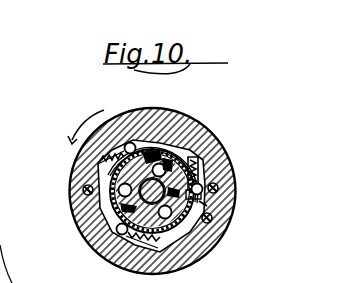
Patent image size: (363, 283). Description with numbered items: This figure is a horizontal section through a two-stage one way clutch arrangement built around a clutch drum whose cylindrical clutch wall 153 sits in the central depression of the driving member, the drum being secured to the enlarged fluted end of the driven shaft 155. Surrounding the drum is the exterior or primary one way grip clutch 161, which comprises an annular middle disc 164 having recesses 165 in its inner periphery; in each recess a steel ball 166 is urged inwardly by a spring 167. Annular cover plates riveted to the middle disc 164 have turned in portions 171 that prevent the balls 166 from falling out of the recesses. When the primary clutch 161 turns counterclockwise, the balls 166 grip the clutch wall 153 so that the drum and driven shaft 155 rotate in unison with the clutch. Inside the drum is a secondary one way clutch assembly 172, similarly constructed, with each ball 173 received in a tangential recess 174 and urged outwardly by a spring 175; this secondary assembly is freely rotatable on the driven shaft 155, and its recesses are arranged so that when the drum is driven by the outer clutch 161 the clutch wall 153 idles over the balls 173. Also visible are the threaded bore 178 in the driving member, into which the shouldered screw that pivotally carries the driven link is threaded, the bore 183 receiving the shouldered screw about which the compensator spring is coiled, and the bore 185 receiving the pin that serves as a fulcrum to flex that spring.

The cylindrical clutch wall 153 is at (188, 147).
The driven shaft 155 is at (110, 230).
The primary one way grip clutch 161 is at (70, 198).
The annular middle disc 164 is at (199, 233).
The recess 165 is at (218, 168).
The steel ball 166 is at (212, 198).
The spring 167 is at (214, 163).
The turned in portion 171 is at (203, 140).
The secondary one way clutch assembly 172 is at (113, 183).
The ball 173 is at (182, 153).
The tangential recess 174 is at (163, 150).
The spring 175 is at (147, 152).
The threaded bore 178 is at (110, 198).
The bore 183 is at (222, 183).
The bore 185 is at (212, 221).